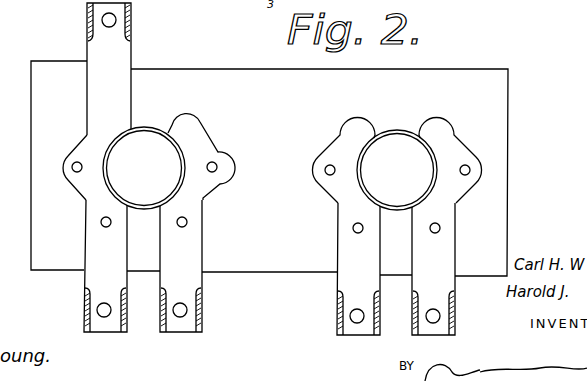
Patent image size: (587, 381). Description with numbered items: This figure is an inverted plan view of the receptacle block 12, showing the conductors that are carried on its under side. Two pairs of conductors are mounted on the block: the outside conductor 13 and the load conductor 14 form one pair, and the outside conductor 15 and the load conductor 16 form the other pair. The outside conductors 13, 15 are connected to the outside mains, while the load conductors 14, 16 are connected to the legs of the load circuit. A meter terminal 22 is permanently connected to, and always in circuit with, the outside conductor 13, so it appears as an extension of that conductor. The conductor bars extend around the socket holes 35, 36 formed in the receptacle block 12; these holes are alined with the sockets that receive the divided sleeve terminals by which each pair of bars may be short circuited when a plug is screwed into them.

The receptacle block 12 is at (508, 125).
The meter terminal 22 is at (101, 22).
The socket hole 35 is at (142, 136).
The socket hole 36 is at (398, 142).
The outside conductor 13 is at (90, 283).
The load conductor 14 is at (190, 282).
The outside conductor 15 is at (440, 290).
The load conductor 16 is at (343, 289).